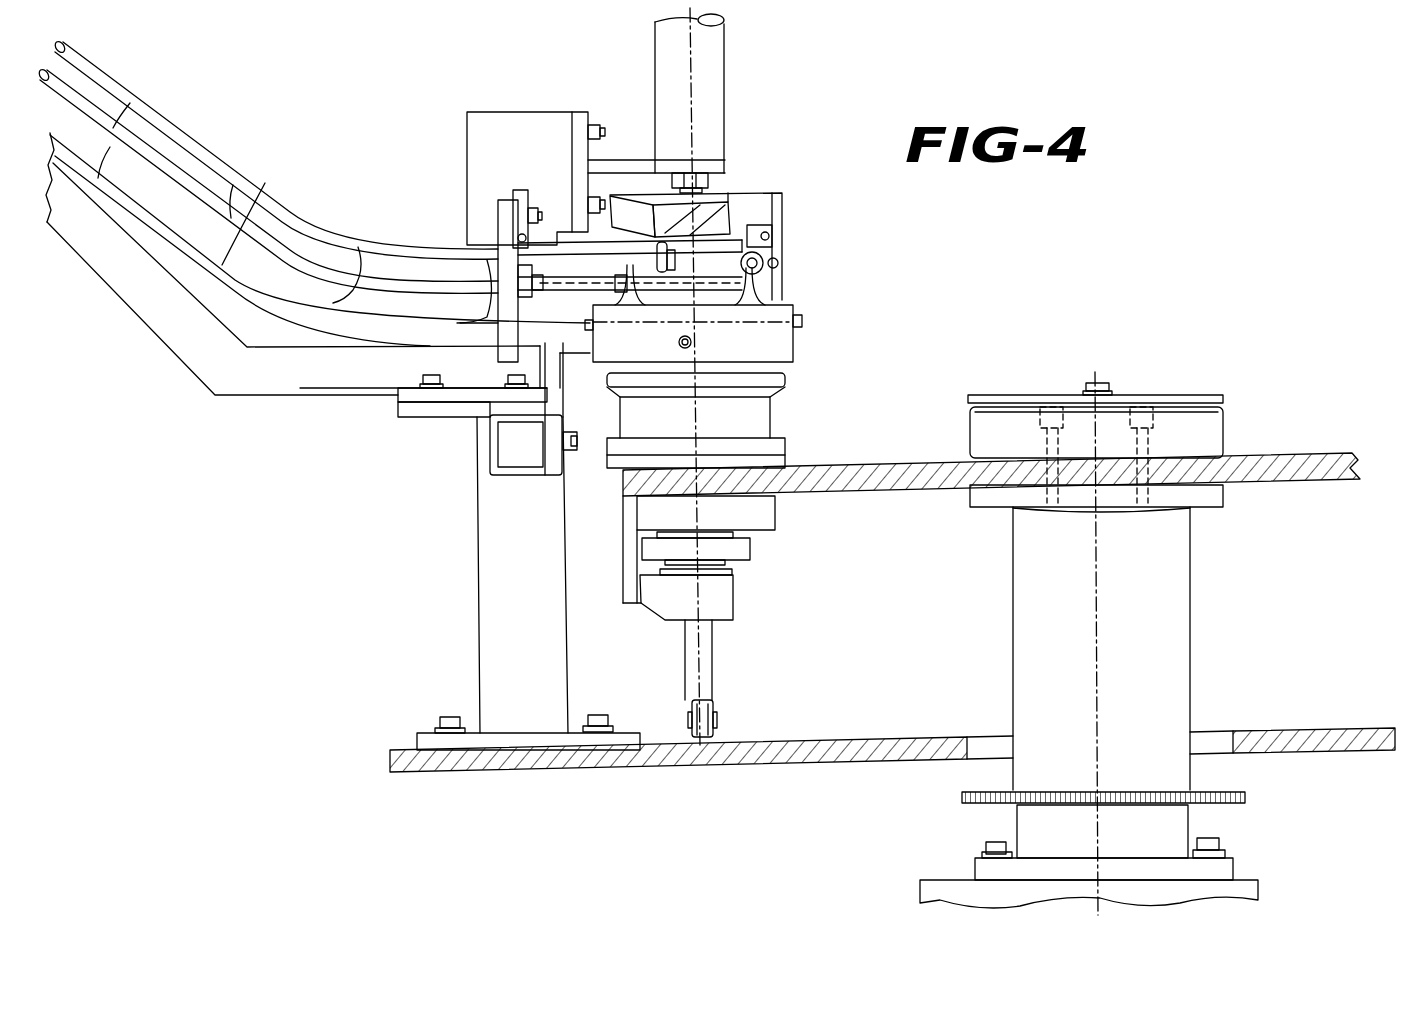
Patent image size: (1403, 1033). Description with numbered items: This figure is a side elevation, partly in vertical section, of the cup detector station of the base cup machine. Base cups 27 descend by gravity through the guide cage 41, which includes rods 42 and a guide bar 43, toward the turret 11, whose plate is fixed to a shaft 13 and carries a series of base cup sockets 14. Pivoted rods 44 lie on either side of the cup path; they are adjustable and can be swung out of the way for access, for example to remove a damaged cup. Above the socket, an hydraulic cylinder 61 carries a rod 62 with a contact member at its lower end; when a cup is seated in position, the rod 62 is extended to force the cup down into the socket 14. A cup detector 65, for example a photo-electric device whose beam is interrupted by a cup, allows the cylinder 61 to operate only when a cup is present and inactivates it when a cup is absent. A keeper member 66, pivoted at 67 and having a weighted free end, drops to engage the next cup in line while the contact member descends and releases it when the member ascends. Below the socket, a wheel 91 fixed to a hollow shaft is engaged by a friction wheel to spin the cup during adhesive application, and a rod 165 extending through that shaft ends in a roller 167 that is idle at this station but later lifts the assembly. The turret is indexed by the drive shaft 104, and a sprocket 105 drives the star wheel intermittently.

The turret 11 is at (870, 468).
The shaft 13 is at (1214, 420).
The base cup socket 14 is at (758, 422).
The base cup 27 is at (392, 256).
The guide cage 41 is at (128, 86).
The rod 42 is at (270, 220).
The guide bar 43 is at (303, 312).
The rod 44 is at (733, 240).
The hydraulic cylinder 61 is at (716, 87).
The rod 62 is at (703, 192).
The cup detector 65 is at (765, 265).
The keeper member 66 is at (783, 208).
The pivot 67 is at (772, 237).
The wheel 91 is at (752, 550).
The drive shaft 104 is at (1185, 657).
The sprocket 105 is at (1248, 797).
The rod 165 is at (709, 678).
The roller 167 is at (705, 712).